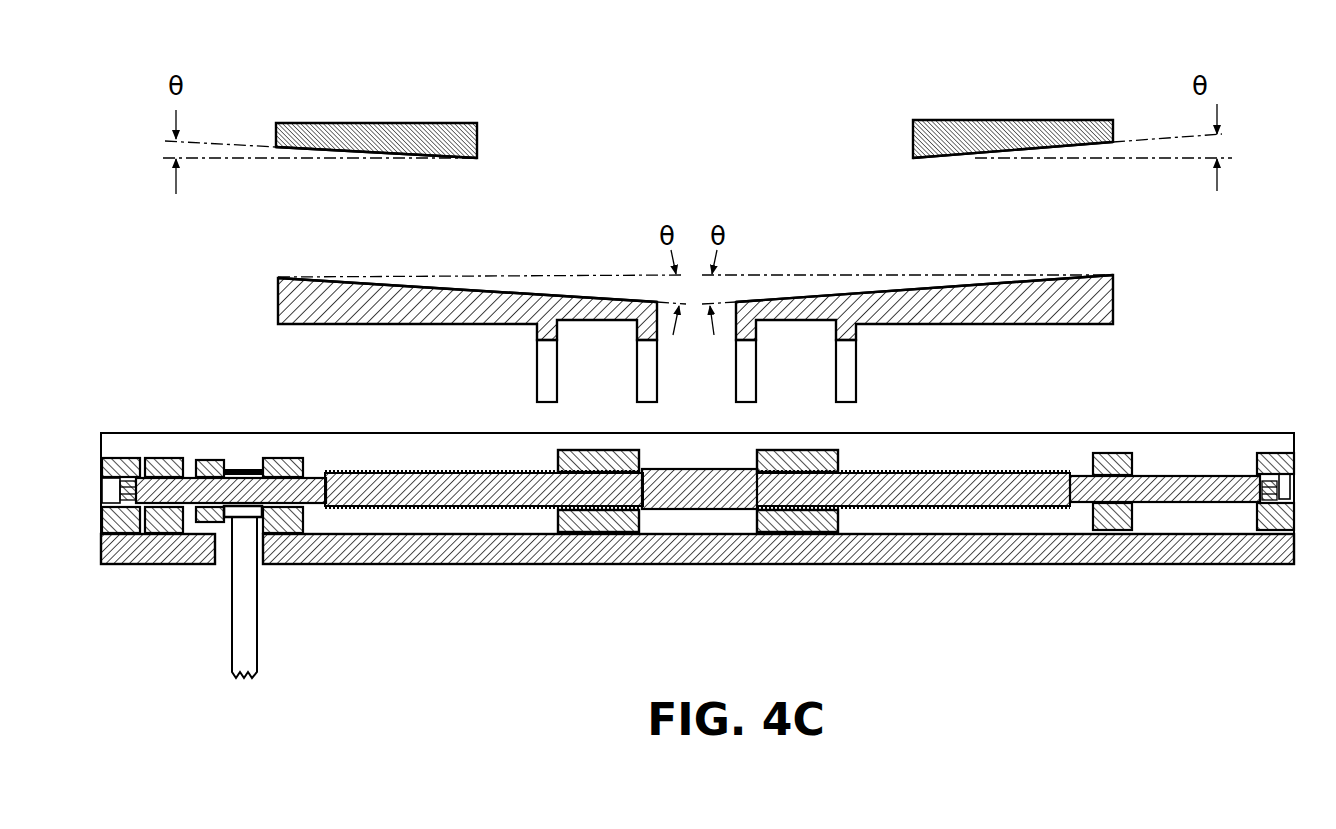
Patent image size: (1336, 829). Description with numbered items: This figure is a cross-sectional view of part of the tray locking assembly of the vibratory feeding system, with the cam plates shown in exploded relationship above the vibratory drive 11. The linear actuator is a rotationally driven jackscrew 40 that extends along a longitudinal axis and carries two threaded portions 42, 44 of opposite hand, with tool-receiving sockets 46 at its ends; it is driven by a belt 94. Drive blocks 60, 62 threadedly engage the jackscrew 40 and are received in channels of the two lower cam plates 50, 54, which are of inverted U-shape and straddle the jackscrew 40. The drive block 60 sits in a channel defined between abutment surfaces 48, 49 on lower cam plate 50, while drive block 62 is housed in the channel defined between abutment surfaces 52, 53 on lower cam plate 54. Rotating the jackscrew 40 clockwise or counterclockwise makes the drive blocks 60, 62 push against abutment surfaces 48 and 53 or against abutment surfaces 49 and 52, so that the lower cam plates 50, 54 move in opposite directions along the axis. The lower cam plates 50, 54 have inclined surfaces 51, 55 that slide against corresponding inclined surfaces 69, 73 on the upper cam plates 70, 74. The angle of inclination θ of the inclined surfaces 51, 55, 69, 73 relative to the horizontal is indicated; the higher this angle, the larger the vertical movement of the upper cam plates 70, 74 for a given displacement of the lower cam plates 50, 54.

The vibratory drive 11 is at (1069, 548).
The jackscrew 40 is at (705, 490).
The threaded portion 42 is at (418, 512).
The threaded portion 44 is at (935, 510).
The tool-receiving socket 46 is at (133, 505).
The abutment surface 48 is at (558, 363).
The abutment surface 49 is at (637, 373).
The lower cam plate 50 is at (436, 318).
The inclined surface 51 is at (433, 288).
The abutment surface 52 is at (757, 363).
The abutment surface 53 is at (833, 373).
The lower cam plate 54 is at (959, 318).
The inclined surface 55 is at (968, 285).
The drive block 60 is at (600, 532).
The drive block 62 is at (798, 522).
The inclined surface 69 is at (441, 160).
The upper cam plate 70 is at (460, 139).
The inclined surface 73 is at (948, 158).
The upper cam plate 74 is at (928, 138).
The belt 94 is at (243, 638).